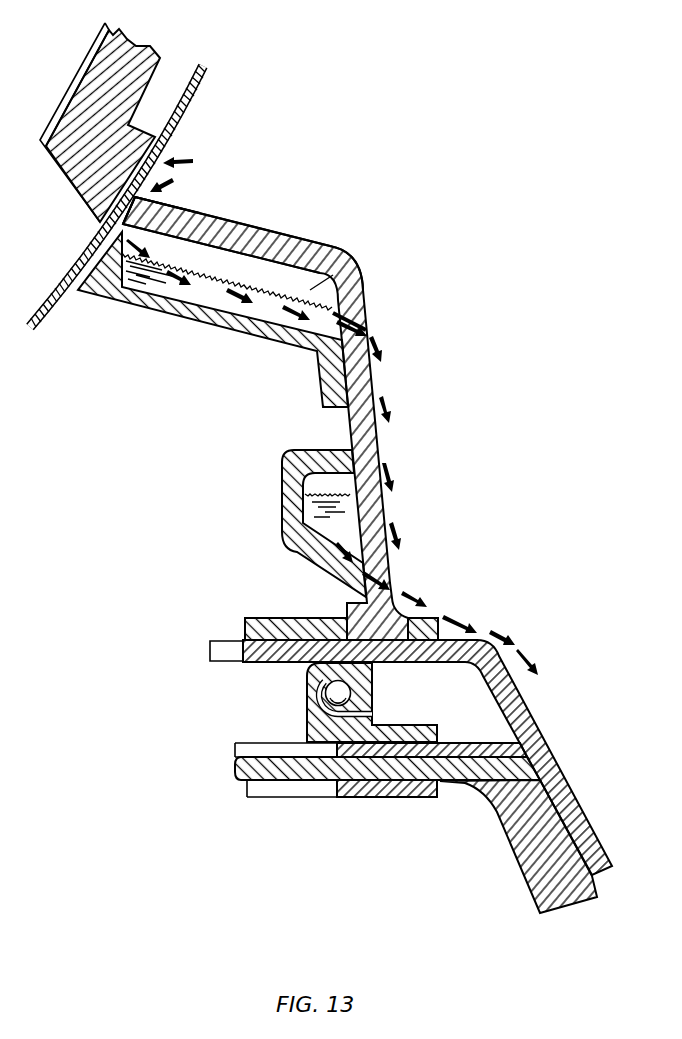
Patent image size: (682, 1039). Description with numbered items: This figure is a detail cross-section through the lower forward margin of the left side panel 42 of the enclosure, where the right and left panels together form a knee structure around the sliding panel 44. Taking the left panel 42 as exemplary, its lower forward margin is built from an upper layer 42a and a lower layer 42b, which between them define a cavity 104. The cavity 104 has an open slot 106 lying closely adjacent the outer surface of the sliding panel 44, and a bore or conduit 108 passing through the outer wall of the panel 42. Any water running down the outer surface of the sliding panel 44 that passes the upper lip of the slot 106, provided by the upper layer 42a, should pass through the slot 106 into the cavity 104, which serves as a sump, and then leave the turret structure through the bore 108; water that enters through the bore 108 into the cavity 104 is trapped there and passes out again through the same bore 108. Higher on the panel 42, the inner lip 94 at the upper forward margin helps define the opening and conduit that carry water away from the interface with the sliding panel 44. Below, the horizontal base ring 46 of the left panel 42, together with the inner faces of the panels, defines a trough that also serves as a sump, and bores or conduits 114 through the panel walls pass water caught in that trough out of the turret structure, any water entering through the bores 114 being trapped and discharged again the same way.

The inner lip 94 is at (150, 50).
The sliding panel 44 is at (193, 102).
The open slot 106 is at (173, 206).
The upper layer 42a is at (260, 224).
The cavity 104 is at (348, 259).
The bore or conduit 108 is at (368, 327).
The lower layer 42b is at (233, 331).
The horizontal base ring 46 is at (300, 507).
The left side panel 42 is at (383, 506).
The bores or conduits 114 is at (388, 582).